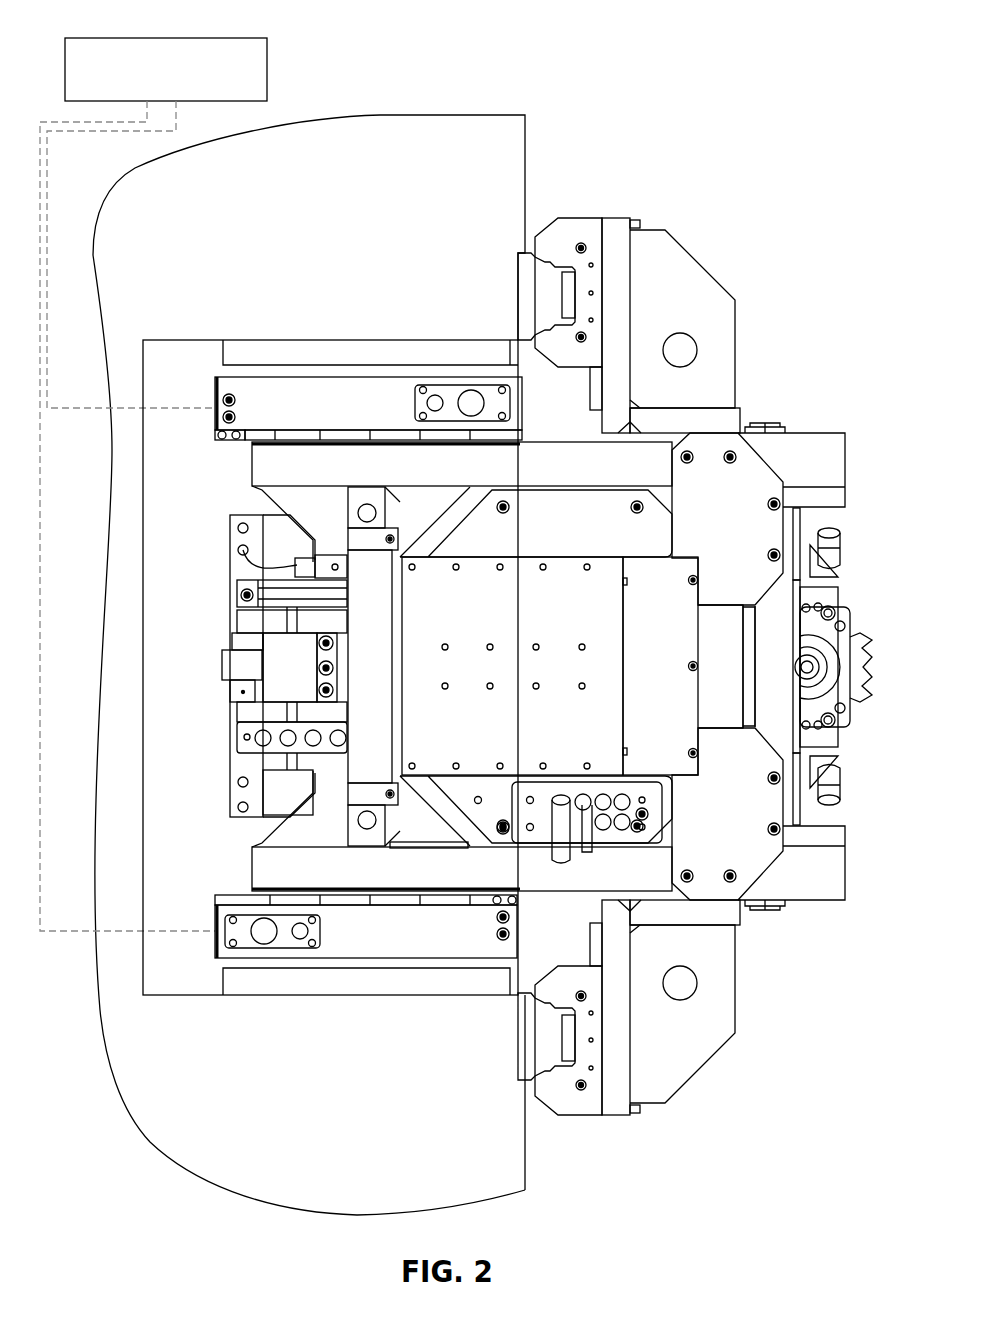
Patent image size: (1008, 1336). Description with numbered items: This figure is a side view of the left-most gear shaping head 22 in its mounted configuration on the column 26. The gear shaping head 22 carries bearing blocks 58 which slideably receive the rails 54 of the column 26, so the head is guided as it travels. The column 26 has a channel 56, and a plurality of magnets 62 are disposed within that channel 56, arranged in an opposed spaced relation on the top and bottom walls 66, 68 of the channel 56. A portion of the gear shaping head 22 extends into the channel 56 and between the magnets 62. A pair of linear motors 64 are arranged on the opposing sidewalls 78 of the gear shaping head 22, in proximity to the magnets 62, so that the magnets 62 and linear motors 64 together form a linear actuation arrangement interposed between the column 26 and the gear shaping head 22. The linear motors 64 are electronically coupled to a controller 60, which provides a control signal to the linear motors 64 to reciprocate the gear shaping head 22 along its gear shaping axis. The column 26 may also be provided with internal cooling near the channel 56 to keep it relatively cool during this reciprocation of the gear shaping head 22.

The gear shaping head 22 is at (852, 441).
The column 26 is at (412, 128).
The rails 54 is at (557, 285).
The channel 56 is at (158, 604).
The bearing blocks 58 is at (584, 230).
The controller 60 is at (240, 38).
The magnets 62 is at (455, 352).
The linear motors 64 is at (240, 387).
The top wall 66 is at (195, 338).
The bottom wall 68 is at (177, 996).
The sidewalls 78 is at (270, 467).